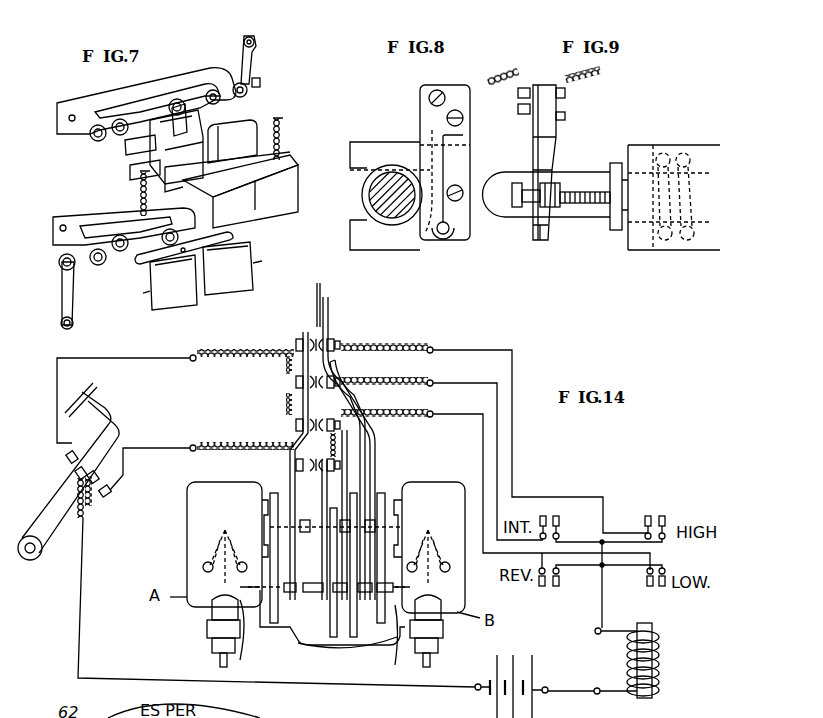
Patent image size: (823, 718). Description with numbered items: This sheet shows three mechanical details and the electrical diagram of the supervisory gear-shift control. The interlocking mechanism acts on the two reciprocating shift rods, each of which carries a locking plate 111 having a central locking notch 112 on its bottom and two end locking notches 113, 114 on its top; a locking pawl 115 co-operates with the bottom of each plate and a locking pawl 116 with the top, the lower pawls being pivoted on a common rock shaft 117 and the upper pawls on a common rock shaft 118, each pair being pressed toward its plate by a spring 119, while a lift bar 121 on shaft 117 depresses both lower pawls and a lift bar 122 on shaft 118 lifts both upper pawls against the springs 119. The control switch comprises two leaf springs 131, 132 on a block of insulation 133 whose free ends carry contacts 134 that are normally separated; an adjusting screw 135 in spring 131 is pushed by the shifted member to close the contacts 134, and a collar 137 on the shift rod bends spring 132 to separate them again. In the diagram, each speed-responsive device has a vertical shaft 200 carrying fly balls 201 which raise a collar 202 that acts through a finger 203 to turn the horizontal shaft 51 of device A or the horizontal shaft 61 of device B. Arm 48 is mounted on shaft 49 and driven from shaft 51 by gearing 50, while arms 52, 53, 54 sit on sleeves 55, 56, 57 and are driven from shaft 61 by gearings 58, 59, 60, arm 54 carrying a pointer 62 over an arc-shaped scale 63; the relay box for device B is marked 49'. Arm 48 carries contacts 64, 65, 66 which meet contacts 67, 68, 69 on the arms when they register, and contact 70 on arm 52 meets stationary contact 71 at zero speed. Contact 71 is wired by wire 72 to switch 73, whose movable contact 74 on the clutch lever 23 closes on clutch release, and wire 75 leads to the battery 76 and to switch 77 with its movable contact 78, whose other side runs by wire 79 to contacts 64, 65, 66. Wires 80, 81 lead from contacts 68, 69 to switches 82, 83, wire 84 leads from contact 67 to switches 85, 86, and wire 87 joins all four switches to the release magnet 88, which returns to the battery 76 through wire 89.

In FIG. 7, the locking plate 111 is at (280, 193).
In FIG. 7, the central locking notch 112 is at (140, 193).
In FIG. 7, the end locking notch 113 is at (253, 157).
In FIG. 7, the end locking notch 114 is at (140, 152).
In FIG. 7, the locking pawl 115 is at (227, 277).
In FIG. 7, the locking pawl 116 is at (225, 115).
In FIG. 7, the rock shaft 117 is at (118, 260).
In FIG. 7, the rock shaft 118 is at (172, 102).
In FIG. 7, the spring 119 is at (277, 125).
In FIG. 7, the lift bar 121 is at (150, 260).
In FIG. 7, the lift bar 122 is at (183, 133).
In FIG. 8, the leaf spring 131 is at (462, 140).
In FIG. 9, the leaf spring 131 is at (560, 153).
In FIG. 8, the leaf spring 132 is at (433, 162).
In FIG. 9, the block of insulation 133 is at (543, 90).
In FIG. 9, the contacts 134 is at (545, 243).
In FIG. 9, the adjusting screw 135 is at (527, 208).
In FIG. 8, the collar 137 is at (366, 192).
In FIG. 9, the collar 137 is at (615, 163).
In FIG. 14, the clutch lever 23 is at (62, 508).
In FIG. 14, the pivoted arm 48 is at (292, 445).
In FIG. 14, the shaft 49 is at (227, 544).
In FIG. 14, the relay B box 49' is at (429, 547).
In FIG. 14, the gearing 50 is at (264, 588).
In FIG. 14, the horizontal shaft 51 is at (266, 620).
In FIG. 14, the pivoted arm 52 is at (326, 492).
In FIG. 14, the pivoted arm 53 is at (346, 437).
In FIG. 14, the pivoted arm 54 is at (338, 365).
In FIG. 14, the sleeve 55 is at (325, 532).
In FIG. 14, the sleeve 56 is at (348, 532).
In FIG. 14, the sleeve 57 is at (373, 532).
In FIG. 14, the gearing 58 is at (325, 575).
In FIG. 14, the gearing 59 is at (351, 575).
In FIG. 14, the gearing 60 is at (374, 558).
In FIG. 14, the horizontal shaft 61 is at (383, 630).
In FIG. 14, the pointer 62 is at (332, 305).
In FIG. 14, the arc-shaped scale 63 is at (322, 287).
In FIG. 14, the contact 64 is at (296, 427).
In FIG. 14, the contact 65 is at (296, 383).
In FIG. 14, the contact 66 is at (300, 339).
In FIG. 14, the contact 67 is at (340, 425).
In FIG. 14, the contact 68 is at (340, 387).
In FIG. 14, the contact 69 is at (336, 338).
In FIG. 14, the contact 70 is at (340, 463).
In FIG. 14, the stationary contact 71 is at (296, 470).
In FIG. 14, the wire 72 is at (148, 445).
In FIG. 14, the switch 73 is at (112, 493).
In FIG. 14, the movable contact 74 is at (95, 477).
In FIG. 14, the wire 75 is at (85, 532).
In FIG. 14, the battery 76 is at (505, 668).
In FIG. 14, the switch 77 is at (66, 458).
In FIG. 14, the movable contact 78 is at (80, 473).
In FIG. 14, the wire 79 is at (97, 362).
In FIG. 14, the wire 80 is at (468, 386).
In FIG. 14, the wire 81 is at (478, 350).
In FIG. 14, the switch 82 is at (571, 528).
In FIG. 14, the switch 83 is at (641, 520).
In FIG. 14, the wire 84 is at (460, 414).
In FIG. 14, the switch 85 is at (570, 575).
In FIG. 14, the switch 86 is at (633, 583).
In FIG. 14, the wire 87 is at (598, 607).
In FIG. 14, the release magnet 88 is at (657, 660).
In FIG. 14, the wire 89 is at (608, 692).
In FIG. 14, the vertical shaft 200 is at (219, 665).
In FIG. 14, the fly balls 201 is at (203, 566).
In FIG. 14, the collar 202 is at (205, 600).
In FIG. 14, the finger 203 is at (240, 640).